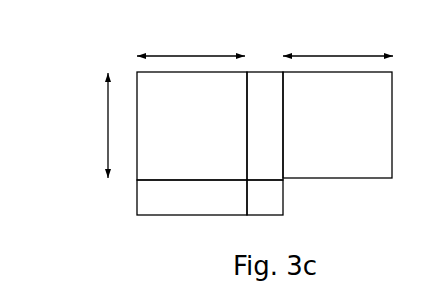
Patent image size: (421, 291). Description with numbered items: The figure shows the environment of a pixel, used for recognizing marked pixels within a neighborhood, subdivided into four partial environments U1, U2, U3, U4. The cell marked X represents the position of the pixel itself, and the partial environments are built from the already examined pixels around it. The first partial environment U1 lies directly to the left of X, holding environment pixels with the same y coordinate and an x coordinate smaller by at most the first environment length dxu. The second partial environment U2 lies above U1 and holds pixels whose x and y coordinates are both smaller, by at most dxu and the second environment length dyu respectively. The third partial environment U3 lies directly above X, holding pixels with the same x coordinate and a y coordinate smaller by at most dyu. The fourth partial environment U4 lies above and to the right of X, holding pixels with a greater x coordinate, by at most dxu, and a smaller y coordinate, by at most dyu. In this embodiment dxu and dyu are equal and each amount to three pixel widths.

The first partial environment U1 is at (192, 197).
The second partial environment U2 is at (192, 126).
The third partial environment U3 is at (265, 126).
The fourth partial environment U4 is at (337, 125).
The region X is at (265, 197).
The first environment length dxu is at (265, 40).
The second environment length dyu is at (72, 125).